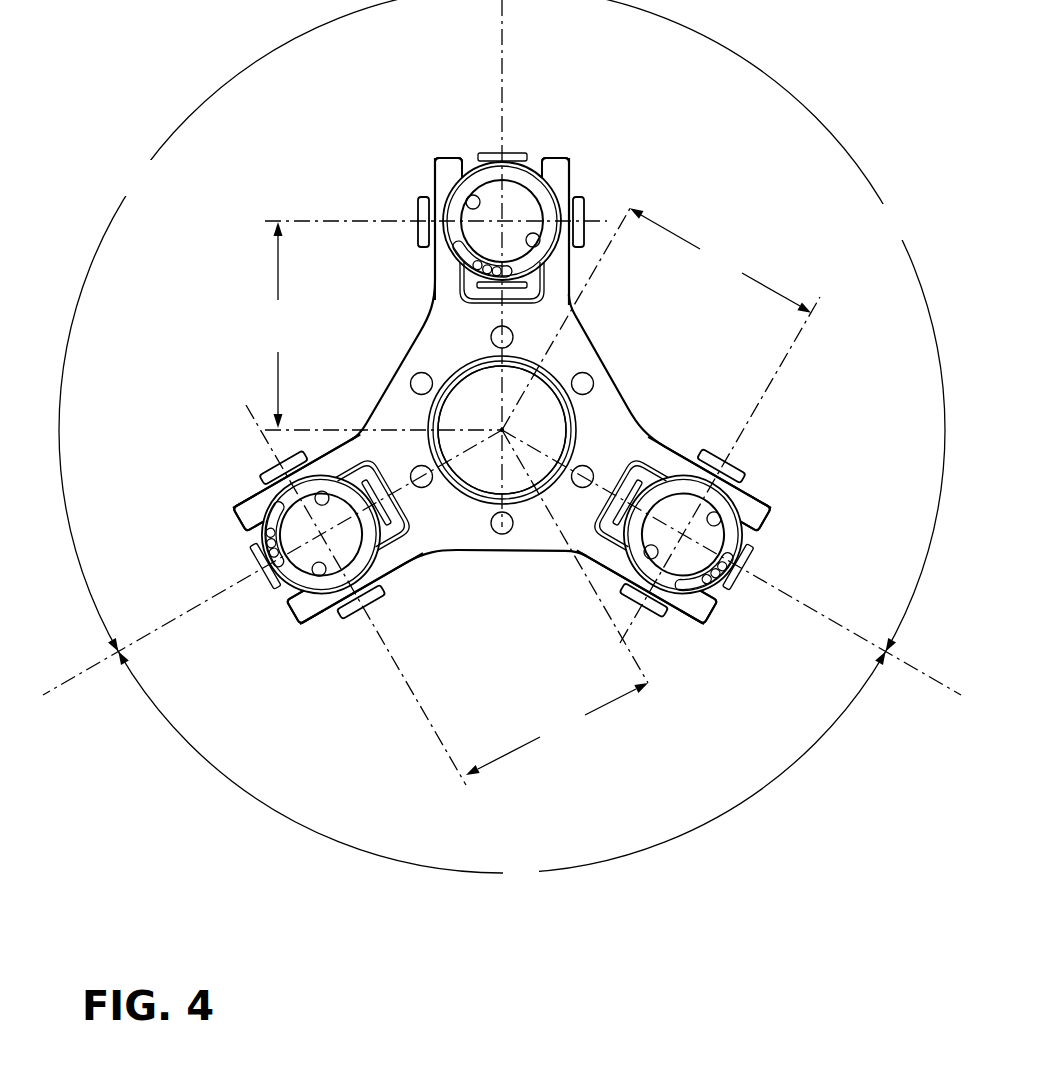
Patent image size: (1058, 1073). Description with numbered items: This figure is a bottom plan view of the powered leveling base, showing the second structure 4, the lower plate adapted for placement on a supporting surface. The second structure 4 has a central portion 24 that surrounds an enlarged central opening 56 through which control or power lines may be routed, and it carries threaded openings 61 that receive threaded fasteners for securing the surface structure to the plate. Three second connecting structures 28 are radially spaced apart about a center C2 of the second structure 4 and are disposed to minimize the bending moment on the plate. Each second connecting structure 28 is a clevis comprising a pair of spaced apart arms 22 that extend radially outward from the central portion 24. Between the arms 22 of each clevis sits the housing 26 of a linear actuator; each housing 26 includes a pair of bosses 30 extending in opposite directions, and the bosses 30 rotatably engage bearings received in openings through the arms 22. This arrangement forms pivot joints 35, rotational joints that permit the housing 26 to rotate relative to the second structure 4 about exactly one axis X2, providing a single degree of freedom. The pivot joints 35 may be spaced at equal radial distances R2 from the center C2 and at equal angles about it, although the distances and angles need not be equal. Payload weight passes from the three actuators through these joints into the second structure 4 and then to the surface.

The second structure 4 is at (600, 333).
The arms 22 is at (433, 188).
The central portion 24 is at (637, 404).
The housing 26 is at (532, 170).
The second connecting structures 28 is at (580, 167).
The bosses 30 is at (422, 245).
The pivot joints 35 is at (558, 145).
The enlarged central opening 56 is at (480, 395).
The threaded openings 61 is at (503, 535).
The axis X2 is at (603, 210).
The radial distance R2 is at (536, 491).
The center C2 is at (502, 430).